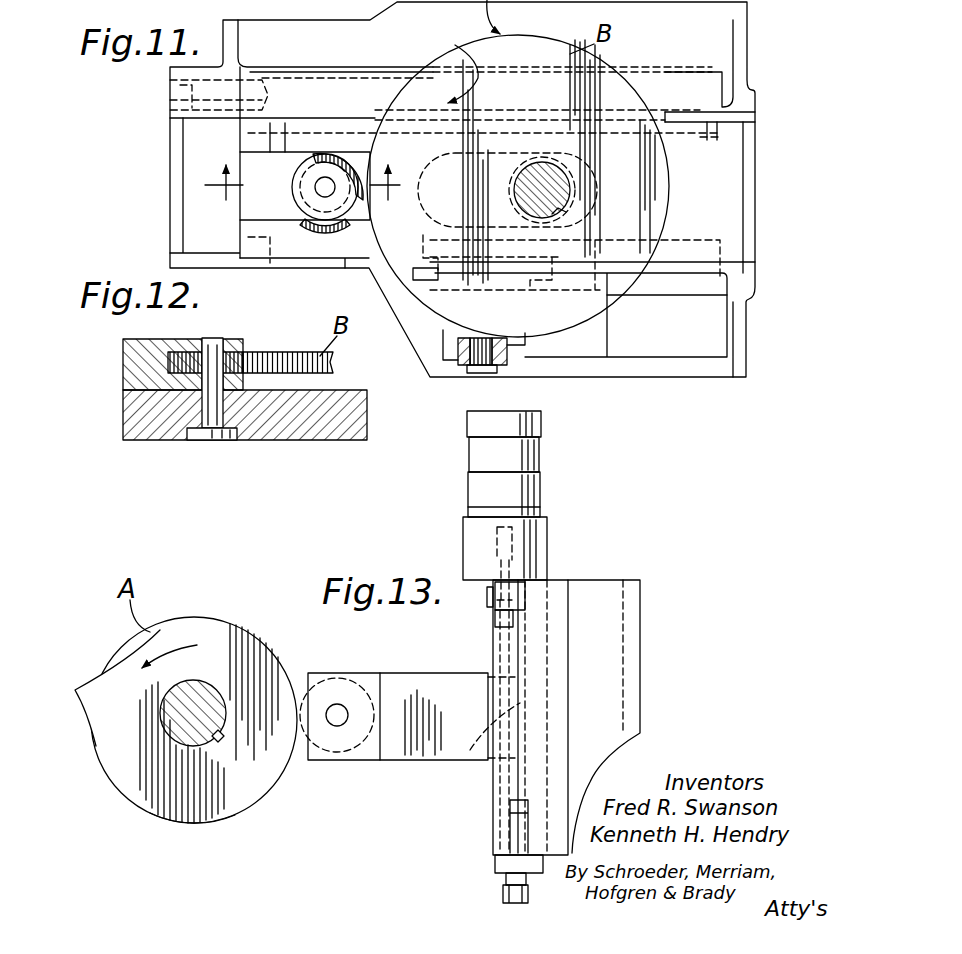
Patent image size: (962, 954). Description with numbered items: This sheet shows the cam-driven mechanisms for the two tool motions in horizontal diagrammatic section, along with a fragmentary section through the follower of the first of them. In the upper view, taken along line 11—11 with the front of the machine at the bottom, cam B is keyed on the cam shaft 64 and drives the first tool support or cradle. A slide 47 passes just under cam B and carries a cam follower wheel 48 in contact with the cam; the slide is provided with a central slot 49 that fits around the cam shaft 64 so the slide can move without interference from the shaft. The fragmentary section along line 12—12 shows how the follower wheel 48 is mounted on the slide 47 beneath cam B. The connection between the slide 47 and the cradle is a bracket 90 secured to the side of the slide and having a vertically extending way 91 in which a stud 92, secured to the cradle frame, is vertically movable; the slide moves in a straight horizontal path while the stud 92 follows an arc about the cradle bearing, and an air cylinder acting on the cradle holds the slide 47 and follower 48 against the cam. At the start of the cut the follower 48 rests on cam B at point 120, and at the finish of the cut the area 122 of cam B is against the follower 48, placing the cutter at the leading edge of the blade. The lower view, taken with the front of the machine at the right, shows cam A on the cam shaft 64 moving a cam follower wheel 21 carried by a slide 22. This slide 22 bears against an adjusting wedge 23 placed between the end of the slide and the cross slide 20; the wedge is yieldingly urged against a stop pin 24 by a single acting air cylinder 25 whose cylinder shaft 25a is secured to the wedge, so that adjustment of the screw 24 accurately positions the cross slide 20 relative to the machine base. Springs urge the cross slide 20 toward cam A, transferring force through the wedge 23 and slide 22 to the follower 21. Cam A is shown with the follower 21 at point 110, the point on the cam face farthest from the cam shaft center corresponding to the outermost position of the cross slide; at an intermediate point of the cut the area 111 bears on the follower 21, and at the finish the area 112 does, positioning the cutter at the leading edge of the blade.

In FIG. 11, the housing 11 is at (742, 34).
In FIG. 11, the section line 12- 12 is at (299, 194).
In FIG. 11, the point on cam B 120 is at (370, 184).
In FIG. 11, the cam follower wheel 48 is at (340, 150).
In FIG. 12, the cam follower wheel 48 is at (232, 360).
In FIG. 11, the central slot 49 is at (487, 158).
In FIG. 11, the cam shaft 64 is at (556, 186).
In FIG. 13, the cam shaft 64 is at (203, 743).
In FIG. 11, the area of cam B 122 is at (672, 176).
In FIG. 11, the slide 47 is at (687, 215).
In FIG. 12, the slide 47 is at (325, 432).
In FIG. 11, the bracket 90 is at (520, 304).
In FIG. 11, the vertically extending way 91 is at (498, 371).
In FIG. 11, the stud 92 is at (478, 358).
In FIG. 13, the cross slide 20 is at (597, 583).
In FIG. 13, the cam follower wheel 21 is at (330, 672).
In FIG. 13, the slide 22 is at (418, 656).
In FIG. 13, the adjusting wedge 23 is at (470, 758).
In FIG. 13, the stop pin 24 is at (503, 895).
In FIG. 13, the single acting air cylinder 25 is at (522, 505).
In FIG. 13, the cylinder shaft 25a is at (520, 550).
In FIG. 13, the point on cam A 110 is at (297, 712).
In FIG. 13, the area of cam A 111 is at (182, 826).
In FIG. 13, the area of cam A 112 is at (90, 738).